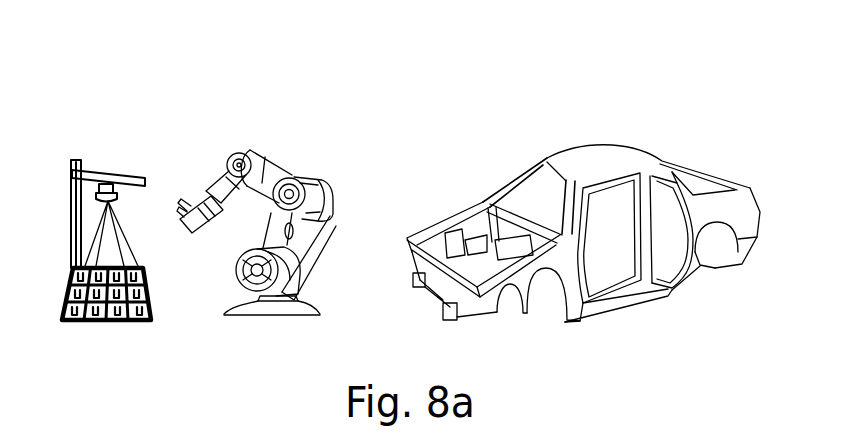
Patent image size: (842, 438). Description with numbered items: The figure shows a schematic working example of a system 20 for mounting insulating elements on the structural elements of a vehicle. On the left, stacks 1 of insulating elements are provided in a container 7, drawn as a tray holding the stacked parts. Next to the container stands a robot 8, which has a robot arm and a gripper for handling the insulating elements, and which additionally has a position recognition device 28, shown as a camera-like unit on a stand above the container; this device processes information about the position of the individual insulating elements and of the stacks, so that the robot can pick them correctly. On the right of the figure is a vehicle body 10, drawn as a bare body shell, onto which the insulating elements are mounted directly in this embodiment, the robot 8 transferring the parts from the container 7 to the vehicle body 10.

The position recognition device 28 is at (108, 157).
The container 7 is at (147, 285).
The stack 1 is at (138, 321).
The robot 8 is at (293, 154).
The system 20 is at (549, 70).
The vehicle body 10 is at (641, 132).